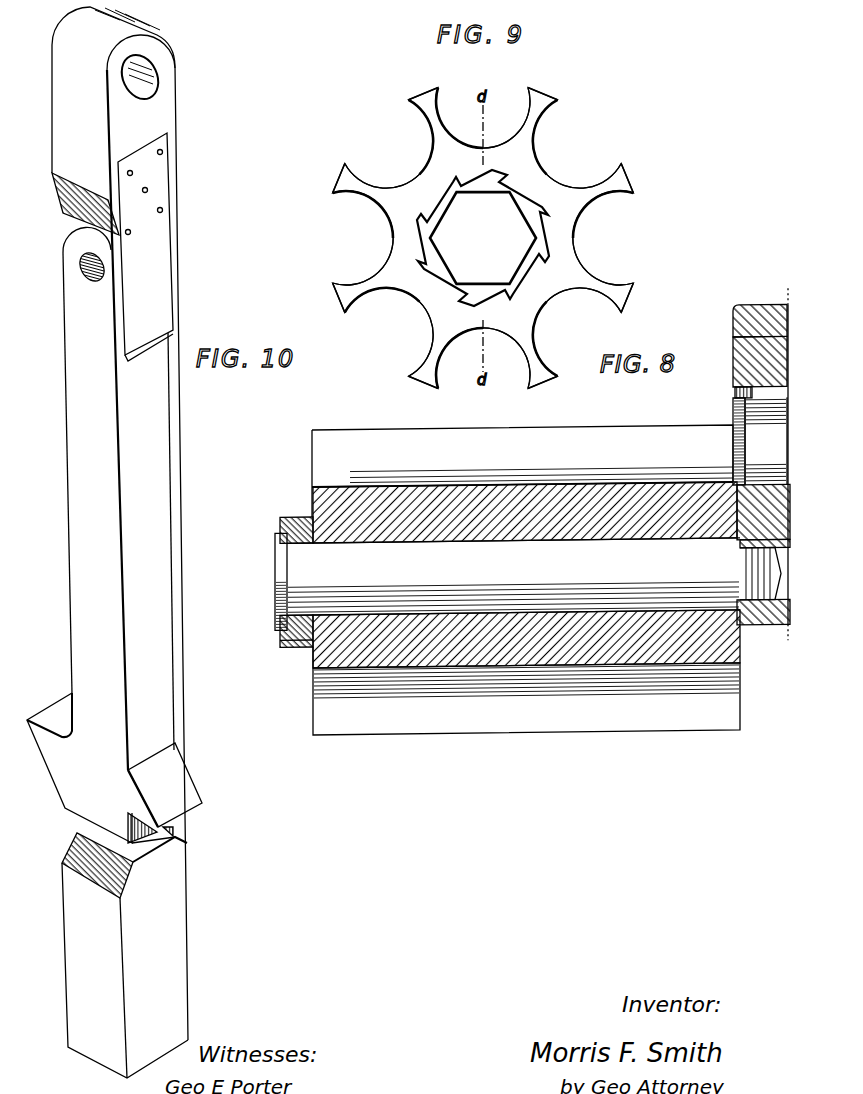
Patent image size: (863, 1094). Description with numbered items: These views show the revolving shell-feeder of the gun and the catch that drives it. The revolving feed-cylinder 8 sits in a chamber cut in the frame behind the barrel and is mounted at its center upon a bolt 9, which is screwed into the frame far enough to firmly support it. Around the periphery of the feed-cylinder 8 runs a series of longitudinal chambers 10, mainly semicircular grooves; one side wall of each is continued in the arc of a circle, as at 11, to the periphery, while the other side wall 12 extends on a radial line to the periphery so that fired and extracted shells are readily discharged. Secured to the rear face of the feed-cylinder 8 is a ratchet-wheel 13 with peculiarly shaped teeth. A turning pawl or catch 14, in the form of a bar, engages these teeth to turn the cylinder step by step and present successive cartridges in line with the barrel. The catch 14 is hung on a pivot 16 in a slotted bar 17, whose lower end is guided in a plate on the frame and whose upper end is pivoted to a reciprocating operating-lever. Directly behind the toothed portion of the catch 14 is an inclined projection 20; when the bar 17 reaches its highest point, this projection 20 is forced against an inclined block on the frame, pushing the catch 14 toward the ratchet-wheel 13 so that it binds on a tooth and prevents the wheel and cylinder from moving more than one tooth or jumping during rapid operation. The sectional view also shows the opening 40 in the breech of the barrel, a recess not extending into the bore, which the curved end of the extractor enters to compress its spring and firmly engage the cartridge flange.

In FIG. 9, the revolving feed-cylinder 8 is at (483, 238).
In FIG. 8, the revolving feed-cylinder 8 is at (479, 429).
In FIG. 9, the bolt 9 is at (483, 238).
In FIG. 8, the bolt 9 is at (534, 576).
In FIG. 9, the longitudinal chambers 10 is at (483, 238).
In FIG. 8, the longitudinal chambers 10 is at (476, 712).
In FIG. 9, the arc-shaped side wall 11 is at (545, 360).
In FIG. 9, the radial side wall 12 is at (604, 296).
In FIG. 9, the ratchet-wheel 13 is at (545, 213).
In FIG. 8, the ratchet-wheel 13 is at (290, 516).
In FIG. 10, the turning pawl or catch 14 is at (42, 743).
In FIG. 10, the pivot 16 is at (80, 267).
In FIG. 10, the slotted bar 17 is at (172, 101).
In FIG. 10, the inclined projection 20 is at (165, 793).
In FIG. 8, the opening (recess) in breech of barrel 40 is at (735, 394).